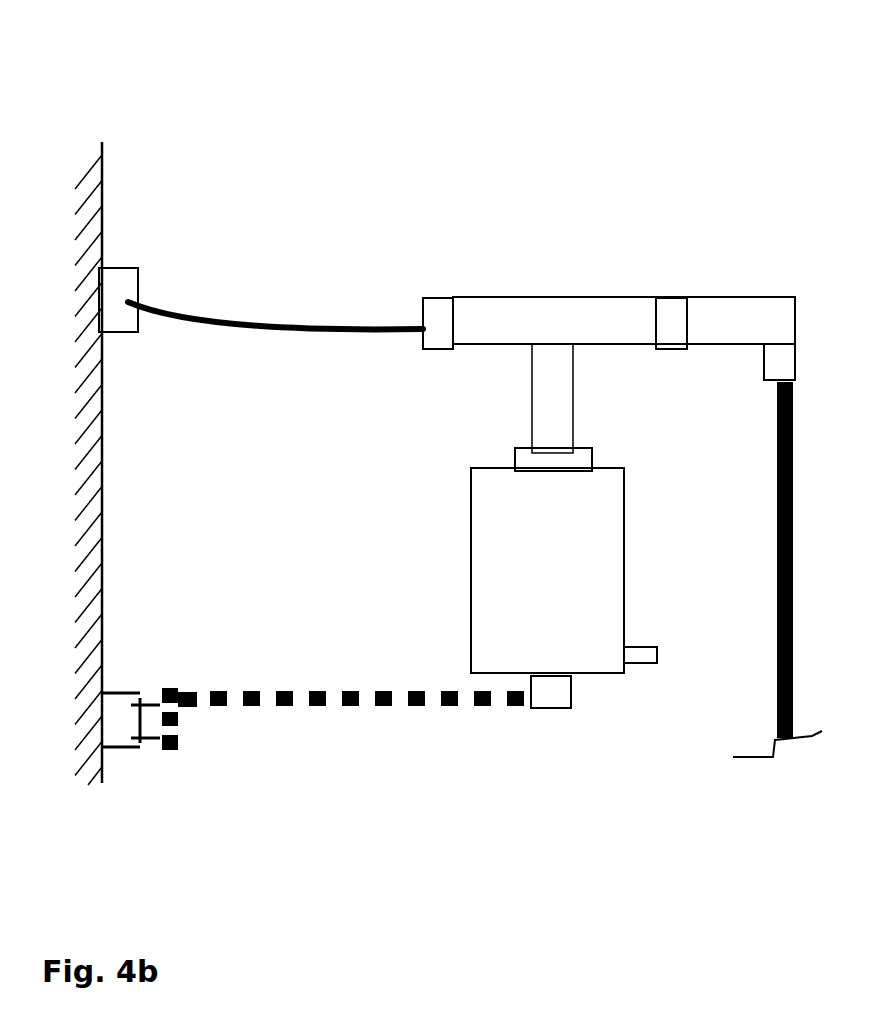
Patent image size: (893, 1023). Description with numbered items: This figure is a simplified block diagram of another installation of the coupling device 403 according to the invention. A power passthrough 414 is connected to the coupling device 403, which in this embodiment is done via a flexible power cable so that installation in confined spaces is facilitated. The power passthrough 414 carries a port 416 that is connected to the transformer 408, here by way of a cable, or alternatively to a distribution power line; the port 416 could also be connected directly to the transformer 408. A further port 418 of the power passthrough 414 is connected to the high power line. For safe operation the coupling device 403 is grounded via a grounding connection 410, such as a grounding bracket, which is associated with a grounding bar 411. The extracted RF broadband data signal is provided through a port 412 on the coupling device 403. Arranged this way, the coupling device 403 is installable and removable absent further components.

The transformer 408 is at (100, 157).
The port 416 is at (439, 298).
The power passthrough 414 is at (548, 298).
The port 418 is at (670, 298).
The coupling device 403 is at (487, 560).
The grounding connection 410 is at (551, 700).
The port 412 is at (641, 667).
The grounding bar 411 is at (131, 720).